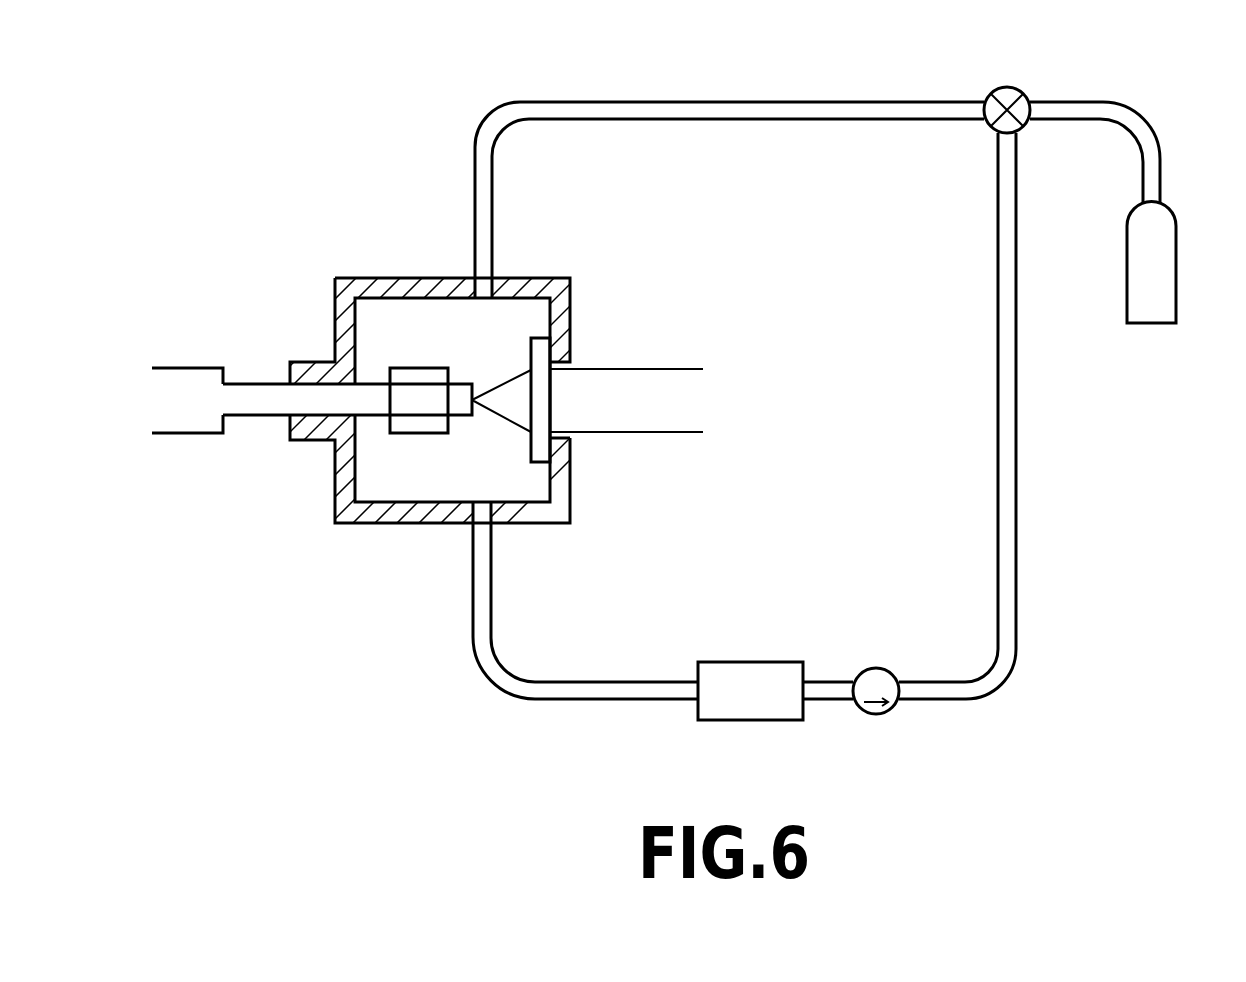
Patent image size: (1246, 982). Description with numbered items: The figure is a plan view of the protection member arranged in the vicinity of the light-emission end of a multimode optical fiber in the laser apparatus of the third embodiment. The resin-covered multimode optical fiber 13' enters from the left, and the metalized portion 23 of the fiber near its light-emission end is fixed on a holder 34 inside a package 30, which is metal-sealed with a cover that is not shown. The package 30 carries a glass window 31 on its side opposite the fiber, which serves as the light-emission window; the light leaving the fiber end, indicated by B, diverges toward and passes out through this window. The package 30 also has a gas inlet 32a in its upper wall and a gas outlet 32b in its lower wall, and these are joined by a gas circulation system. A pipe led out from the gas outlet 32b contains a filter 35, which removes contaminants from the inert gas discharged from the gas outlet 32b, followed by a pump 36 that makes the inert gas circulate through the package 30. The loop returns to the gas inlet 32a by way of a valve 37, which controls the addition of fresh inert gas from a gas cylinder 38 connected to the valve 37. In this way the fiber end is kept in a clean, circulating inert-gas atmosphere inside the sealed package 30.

The resin-covered multimode optical fiber 13' is at (180, 355).
The metalized portion of the multimode optical fiber 23 is at (253, 380).
The package 30 is at (333, 495).
The glass window 31 is at (543, 350).
The gas inlet 32a is at (483, 288).
The gas outlet 32b is at (480, 512).
The holder 34 is at (407, 377).
The filter 35 is at (773, 722).
The pump 36 is at (877, 715).
The valve 37 is at (1010, 88).
The gas cylinder 38 is at (1177, 250).
The light beam B is at (657, 383).